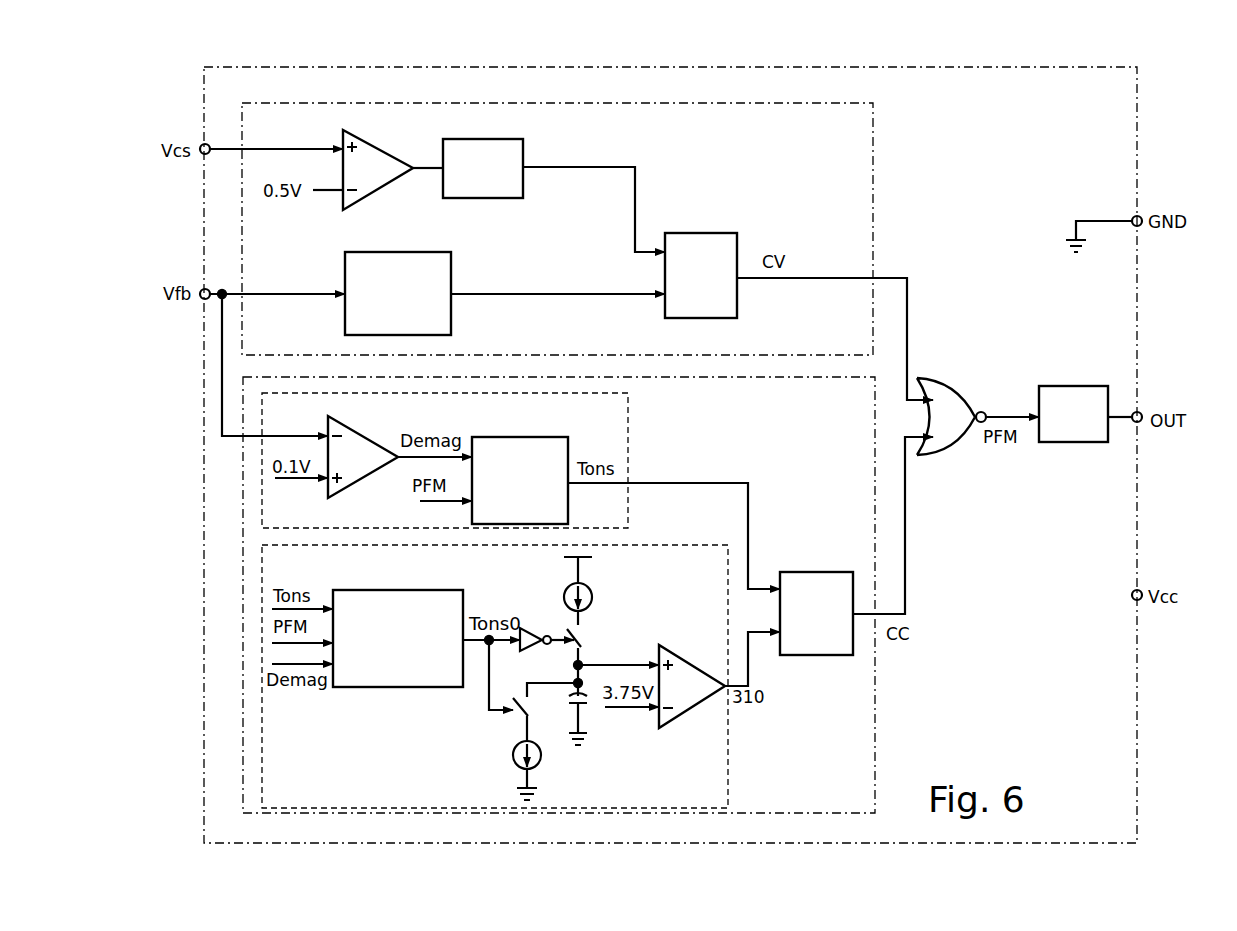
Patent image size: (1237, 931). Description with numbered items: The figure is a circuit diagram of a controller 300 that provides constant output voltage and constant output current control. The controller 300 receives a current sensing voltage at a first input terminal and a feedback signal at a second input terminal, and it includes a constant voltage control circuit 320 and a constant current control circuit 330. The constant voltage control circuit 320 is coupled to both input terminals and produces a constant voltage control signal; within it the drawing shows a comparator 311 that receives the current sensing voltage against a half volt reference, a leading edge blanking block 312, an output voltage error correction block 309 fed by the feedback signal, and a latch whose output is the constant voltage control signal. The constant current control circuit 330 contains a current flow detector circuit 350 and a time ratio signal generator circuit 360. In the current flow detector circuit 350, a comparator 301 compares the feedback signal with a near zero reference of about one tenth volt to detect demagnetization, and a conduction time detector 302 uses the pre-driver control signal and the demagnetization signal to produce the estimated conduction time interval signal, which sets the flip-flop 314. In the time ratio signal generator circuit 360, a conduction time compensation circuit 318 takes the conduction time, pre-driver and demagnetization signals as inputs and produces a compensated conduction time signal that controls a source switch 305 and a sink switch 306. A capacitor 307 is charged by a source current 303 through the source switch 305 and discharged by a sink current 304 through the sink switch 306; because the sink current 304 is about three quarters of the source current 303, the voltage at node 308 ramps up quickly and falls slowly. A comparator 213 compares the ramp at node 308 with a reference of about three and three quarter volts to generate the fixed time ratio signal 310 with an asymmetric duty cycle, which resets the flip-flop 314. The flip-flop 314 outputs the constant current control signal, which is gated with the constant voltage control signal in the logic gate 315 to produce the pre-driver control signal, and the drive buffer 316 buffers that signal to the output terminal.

The controller 300 is at (1150, 104).
The constant voltage control circuit 320 is at (887, 183).
The constant current control circuit 330 is at (876, 712).
The current flow detector circuit 350 is at (307, 524).
The time ratio signal generator circuit 360 is at (321, 776).
The current sense comparator 311 is at (383, 133).
The leading edge blanking circuit 312 is at (495, 133).
The output voltage error correction circuit 309 is at (457, 272).
The fixed time ratio signal 310 is at (697, 222).
The comparator 301 is at (362, 484).
The Tons detector 302 is at (541, 435).
The conduction time compensation circuit 318 is at (383, 587).
The source current 303 is at (607, 594).
The source switch 305 is at (587, 640).
The node 308 is at (617, 657).
The capacitor 307 is at (588, 708).
The sink switch 306 is at (497, 719).
The sink current 304 is at (546, 757).
The comparator 213 is at (690, 712).
The flip-flop 314 is at (810, 657).
The logic gate 315 is at (951, 393).
The drive buffer 316 is at (1068, 383).